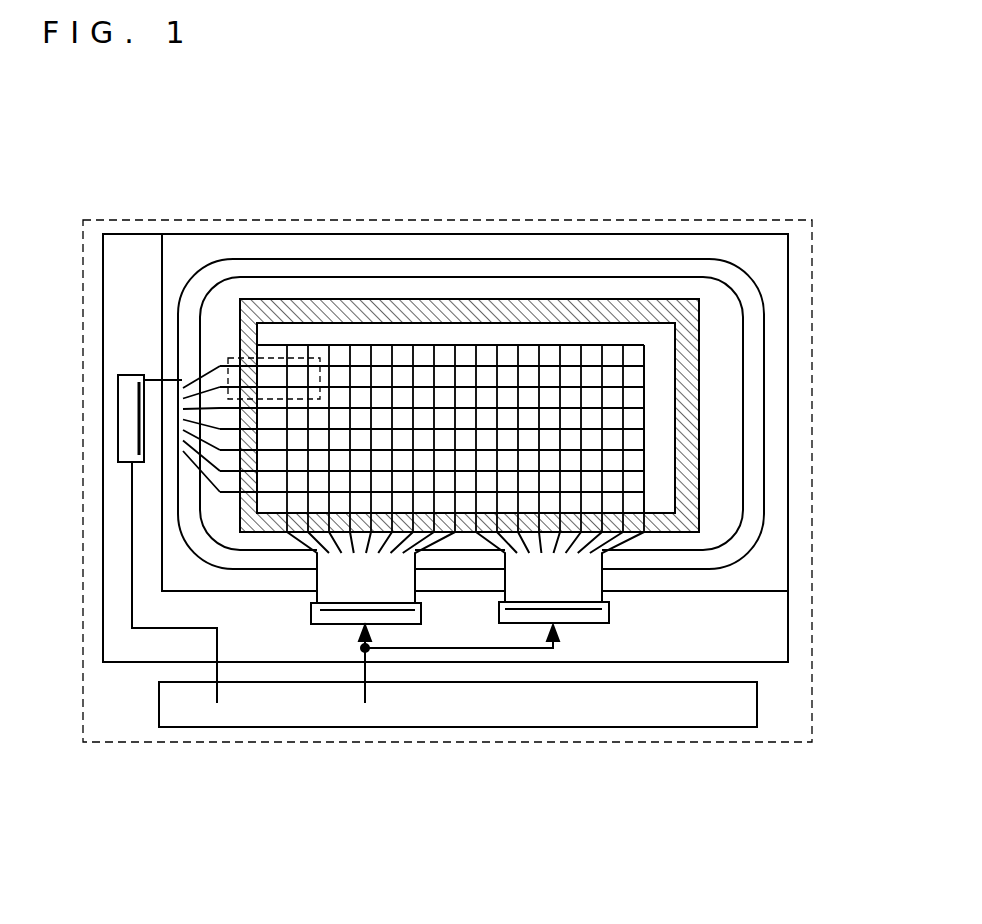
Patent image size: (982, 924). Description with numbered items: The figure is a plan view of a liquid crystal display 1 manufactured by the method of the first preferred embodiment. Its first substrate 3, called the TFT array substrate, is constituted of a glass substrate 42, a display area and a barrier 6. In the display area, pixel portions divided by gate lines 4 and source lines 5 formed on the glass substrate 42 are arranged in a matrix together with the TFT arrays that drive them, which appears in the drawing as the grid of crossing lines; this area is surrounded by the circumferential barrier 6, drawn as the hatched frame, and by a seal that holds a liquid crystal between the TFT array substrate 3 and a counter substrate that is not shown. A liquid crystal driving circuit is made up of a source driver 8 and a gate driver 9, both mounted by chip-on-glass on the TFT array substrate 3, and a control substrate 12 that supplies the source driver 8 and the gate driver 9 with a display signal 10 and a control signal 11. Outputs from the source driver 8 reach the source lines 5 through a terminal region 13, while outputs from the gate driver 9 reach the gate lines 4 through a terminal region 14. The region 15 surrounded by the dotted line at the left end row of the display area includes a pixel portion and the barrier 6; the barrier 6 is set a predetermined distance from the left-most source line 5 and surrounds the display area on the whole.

The liquid crystal display 1 is at (447, 220).
The first substrate 3 is at (585, 248).
The gate lines 4 is at (635, 365).
The source lines 5 is at (644, 378).
The barrier 6 is at (699, 425).
The source driver 8 is at (343, 617).
The gate driver 9 is at (128, 440).
The display signal 10 is at (423, 653).
The control signal 11 is at (133, 633).
The control substrate 12 is at (222, 712).
The terminal region 13 is at (325, 608).
The terminal region 14 is at (140, 392).
The region surrounded by the dotted line 15 is at (270, 355).
The glass substrate 42 is at (137, 235).